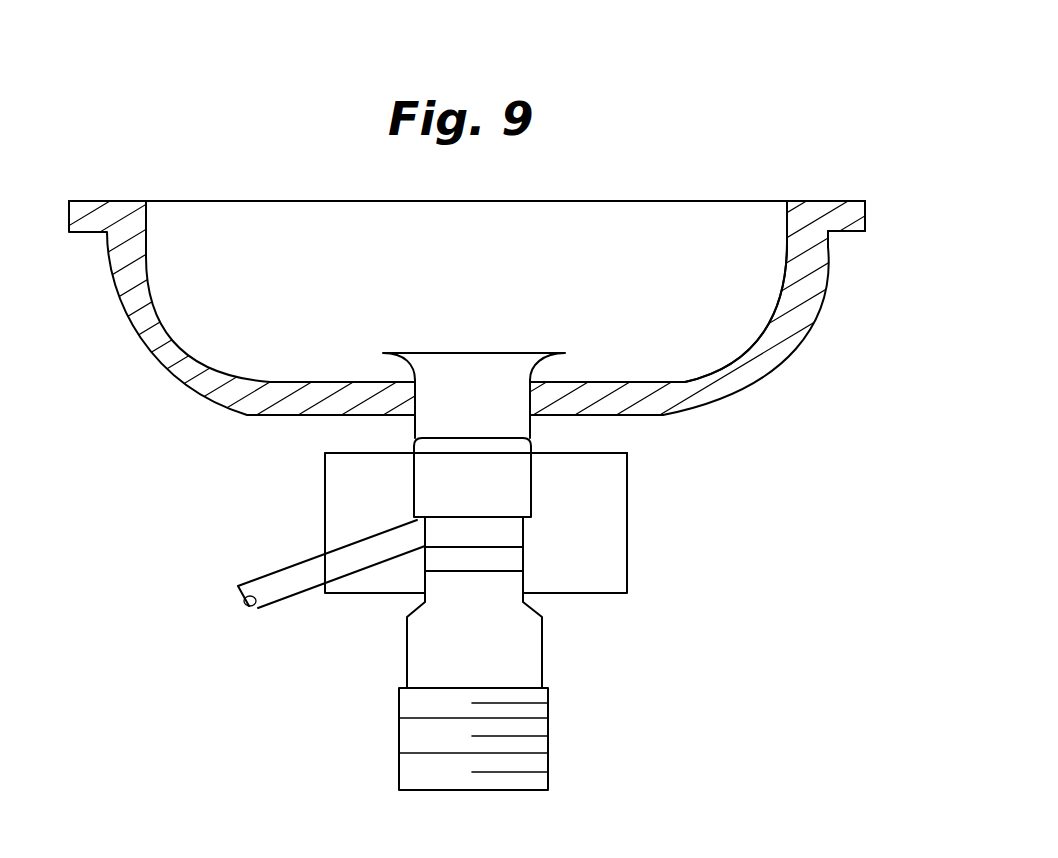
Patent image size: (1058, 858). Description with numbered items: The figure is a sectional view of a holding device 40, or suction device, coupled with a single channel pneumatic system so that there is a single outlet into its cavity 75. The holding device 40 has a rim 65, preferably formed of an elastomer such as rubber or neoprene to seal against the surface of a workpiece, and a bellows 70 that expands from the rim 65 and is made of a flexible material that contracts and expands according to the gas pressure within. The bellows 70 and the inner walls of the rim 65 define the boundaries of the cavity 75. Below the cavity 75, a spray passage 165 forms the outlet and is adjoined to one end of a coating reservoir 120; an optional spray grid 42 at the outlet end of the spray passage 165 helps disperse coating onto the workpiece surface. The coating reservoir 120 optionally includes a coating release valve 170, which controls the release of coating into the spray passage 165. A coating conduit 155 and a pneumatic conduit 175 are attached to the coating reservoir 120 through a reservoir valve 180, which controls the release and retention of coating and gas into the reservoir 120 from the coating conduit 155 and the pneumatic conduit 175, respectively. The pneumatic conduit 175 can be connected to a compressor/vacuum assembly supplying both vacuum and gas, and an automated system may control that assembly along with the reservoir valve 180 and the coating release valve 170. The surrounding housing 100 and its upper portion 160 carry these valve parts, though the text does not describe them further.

The holding device 40 is at (340, 172).
The spray grid 42 is at (473, 352).
The rim 65 is at (912, 167).
The bellows 70 is at (810, 300).
The cavity 75 is at (737, 313).
The housing 100 is at (627, 504).
The coating reservoir 120 is at (432, 475).
The coating conduit 155 is at (280, 602).
The housing upper portion 160 is at (630, 458).
The spray passage 165 is at (515, 398).
The coating release valve 170 is at (418, 449).
The pneumatic conduit 175 is at (548, 718).
The reservoir valve 180 is at (450, 532).